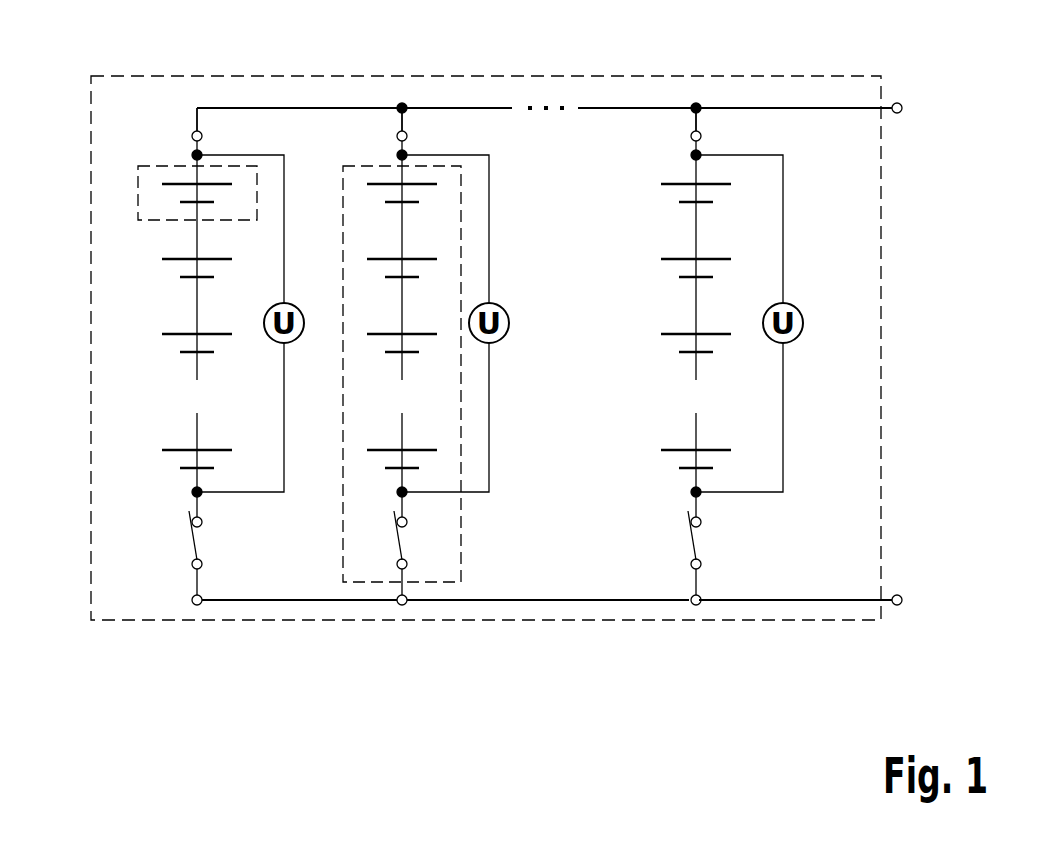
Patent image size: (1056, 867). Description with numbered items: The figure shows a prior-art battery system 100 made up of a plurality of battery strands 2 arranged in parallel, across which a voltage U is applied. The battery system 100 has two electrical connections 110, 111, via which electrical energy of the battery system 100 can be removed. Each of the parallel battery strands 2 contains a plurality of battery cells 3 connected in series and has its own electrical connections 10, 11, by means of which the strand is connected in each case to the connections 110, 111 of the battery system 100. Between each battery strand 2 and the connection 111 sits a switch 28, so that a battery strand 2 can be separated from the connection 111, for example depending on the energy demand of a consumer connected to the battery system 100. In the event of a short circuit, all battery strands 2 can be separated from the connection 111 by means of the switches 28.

The battery system 100 is at (713, 75).
The electrical connection 110 is at (903, 108).
The electrical connection 111 is at (903, 600).
The battery strand 2 is at (463, 540).
The battery cell 3 is at (137, 196).
The electrical connection 10 is at (196, 132).
The electrical connection 11 is at (192, 569).
The switch 28 is at (190, 540).